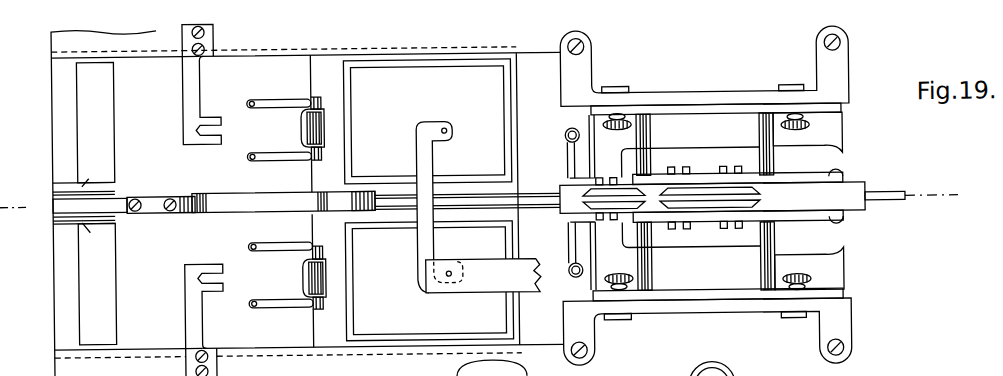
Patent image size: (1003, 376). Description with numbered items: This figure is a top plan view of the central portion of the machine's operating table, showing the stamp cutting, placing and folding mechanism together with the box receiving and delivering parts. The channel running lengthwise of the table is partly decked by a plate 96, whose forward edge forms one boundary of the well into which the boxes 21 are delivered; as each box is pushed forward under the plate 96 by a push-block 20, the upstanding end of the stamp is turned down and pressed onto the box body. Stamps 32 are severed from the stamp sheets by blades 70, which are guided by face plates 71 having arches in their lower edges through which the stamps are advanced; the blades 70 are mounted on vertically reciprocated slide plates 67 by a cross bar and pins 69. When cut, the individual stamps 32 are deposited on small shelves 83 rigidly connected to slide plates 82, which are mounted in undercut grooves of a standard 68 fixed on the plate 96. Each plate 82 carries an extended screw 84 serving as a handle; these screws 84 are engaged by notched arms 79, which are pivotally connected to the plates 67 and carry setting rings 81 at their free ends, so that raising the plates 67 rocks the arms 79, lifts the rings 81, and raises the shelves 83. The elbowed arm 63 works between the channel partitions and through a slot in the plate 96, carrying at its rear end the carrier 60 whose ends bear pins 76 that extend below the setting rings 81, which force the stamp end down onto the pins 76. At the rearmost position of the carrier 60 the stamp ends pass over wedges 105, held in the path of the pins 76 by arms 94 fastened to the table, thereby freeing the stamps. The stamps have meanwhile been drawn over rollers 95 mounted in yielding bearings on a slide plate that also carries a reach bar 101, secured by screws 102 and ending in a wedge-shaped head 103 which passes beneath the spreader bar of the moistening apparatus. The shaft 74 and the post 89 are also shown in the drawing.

The push-block 20 is at (944, 199).
The box 21 is at (412, 77).
The stamp 32 is at (492, 284).
The carrier 60 is at (423, 212).
The elbowed arm 63 is at (541, 194).
The slide plate 67 is at (694, 185).
The standard 68 is at (853, 196).
The pin 69 is at (777, 245).
The blade 70 is at (718, 111).
The face plate 71 is at (713, 101).
The shaft 74 is at (57, 197).
The pin 76 is at (449, 130).
The arm 79 is at (800, 183).
The setting ring 81 is at (566, 136).
The slide plate 82 is at (601, 185).
The shelf 83 is at (844, 137).
The screw 84 is at (605, 222).
The guide post 89 is at (652, 143).
The arm 94 is at (188, 77).
The roller 95 is at (315, 129).
The plate 96 is at (393, 199).
The reach bar 101 is at (238, 199).
The screw 102 is at (173, 196).
The wedge-shaped head 103 is at (354, 192).
The wedge 105 is at (223, 127).